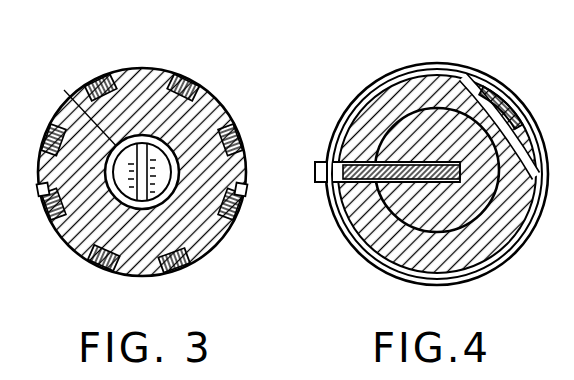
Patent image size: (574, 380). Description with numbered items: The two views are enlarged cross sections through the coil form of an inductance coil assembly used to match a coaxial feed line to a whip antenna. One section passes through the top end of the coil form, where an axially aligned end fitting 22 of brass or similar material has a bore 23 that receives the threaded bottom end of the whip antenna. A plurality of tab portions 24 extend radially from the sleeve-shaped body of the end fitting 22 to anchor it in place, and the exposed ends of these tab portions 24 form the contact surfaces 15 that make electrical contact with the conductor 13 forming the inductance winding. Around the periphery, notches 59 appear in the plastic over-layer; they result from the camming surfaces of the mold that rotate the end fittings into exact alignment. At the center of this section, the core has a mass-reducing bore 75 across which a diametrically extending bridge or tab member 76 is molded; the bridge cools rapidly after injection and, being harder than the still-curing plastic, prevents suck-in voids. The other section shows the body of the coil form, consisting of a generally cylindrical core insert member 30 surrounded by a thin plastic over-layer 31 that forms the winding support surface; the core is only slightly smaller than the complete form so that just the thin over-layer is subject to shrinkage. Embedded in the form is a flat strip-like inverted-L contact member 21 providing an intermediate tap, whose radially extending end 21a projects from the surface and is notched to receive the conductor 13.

In FIG. 3, the contact surfaces 15 is at (209, 92).
In FIG. 3, the tab portions 24 is at (247, 168).
In FIG. 3, the bridge or tab member 76 is at (64, 90).
In FIG. 3, the mass-reducing bore 75 is at (157, 165).
In FIG. 3, the bore 23 is at (164, 198).
In FIG. 3, the end fitting 22 is at (138, 240).
In FIG. 3, the notches 59 is at (243, 198).
In FIG. 4, the electrical conductor 13 is at (438, 66).
In FIG. 4, the plastic over-layer 31 is at (470, 96).
In FIG. 4, the core insert member 30 is at (405, 143).
In FIG. 4, the contact member 21 is at (380, 186).
In FIG. 4, the radially-extending end 21a is at (315, 173).